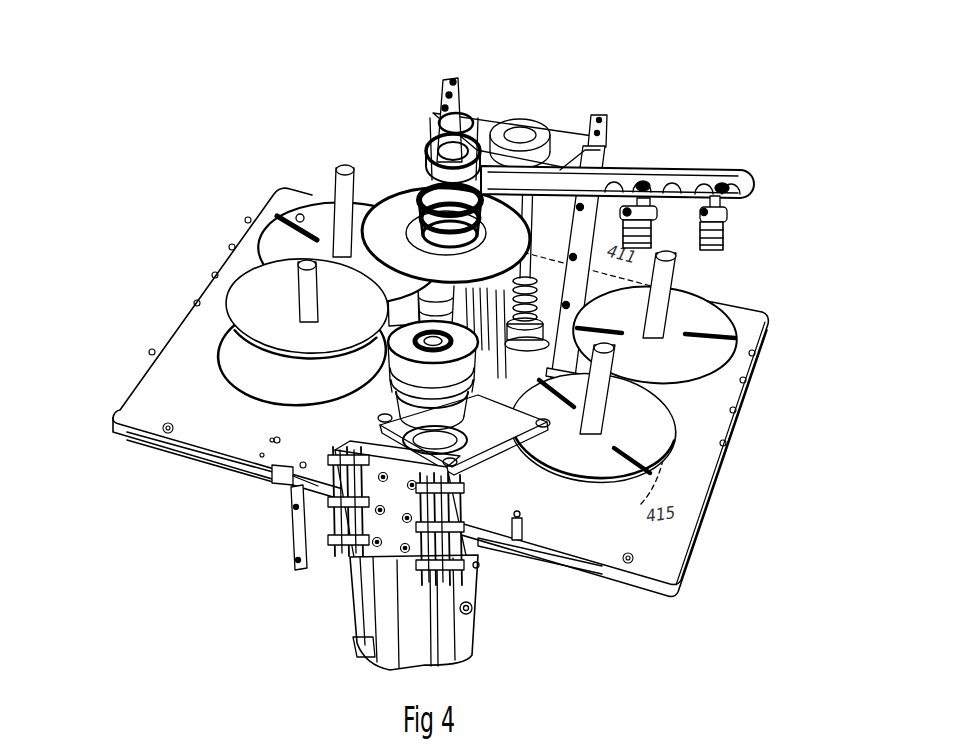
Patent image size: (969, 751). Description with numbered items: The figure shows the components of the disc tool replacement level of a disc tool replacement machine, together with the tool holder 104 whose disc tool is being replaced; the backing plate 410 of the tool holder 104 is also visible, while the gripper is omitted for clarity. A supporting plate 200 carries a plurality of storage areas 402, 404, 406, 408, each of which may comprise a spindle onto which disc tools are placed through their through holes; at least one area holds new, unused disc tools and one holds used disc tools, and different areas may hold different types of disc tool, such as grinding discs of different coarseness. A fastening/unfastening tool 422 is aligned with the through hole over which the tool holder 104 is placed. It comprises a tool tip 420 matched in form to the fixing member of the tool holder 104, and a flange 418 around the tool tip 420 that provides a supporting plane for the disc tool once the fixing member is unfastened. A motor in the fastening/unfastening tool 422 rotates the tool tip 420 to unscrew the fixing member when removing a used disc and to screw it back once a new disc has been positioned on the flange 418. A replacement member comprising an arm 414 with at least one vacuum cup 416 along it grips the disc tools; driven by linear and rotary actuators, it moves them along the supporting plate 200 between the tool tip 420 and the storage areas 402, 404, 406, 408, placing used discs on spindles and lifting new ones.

The supporting plate 200 is at (162, 373).
The tool holder 104 is at (437, 133).
The storage area 402 is at (286, 372).
The storage area 404 is at (318, 222).
The storage area 406 is at (700, 318).
The storage area 408 is at (648, 450).
The backing plate 410 is at (403, 216).
The arm 414 is at (607, 170).
The vacuum cup 416 is at (651, 234).
The flange 418 is at (440, 337).
The tool tip 420 is at (447, 349).
The fastening/unfastening tool 422 is at (427, 419).